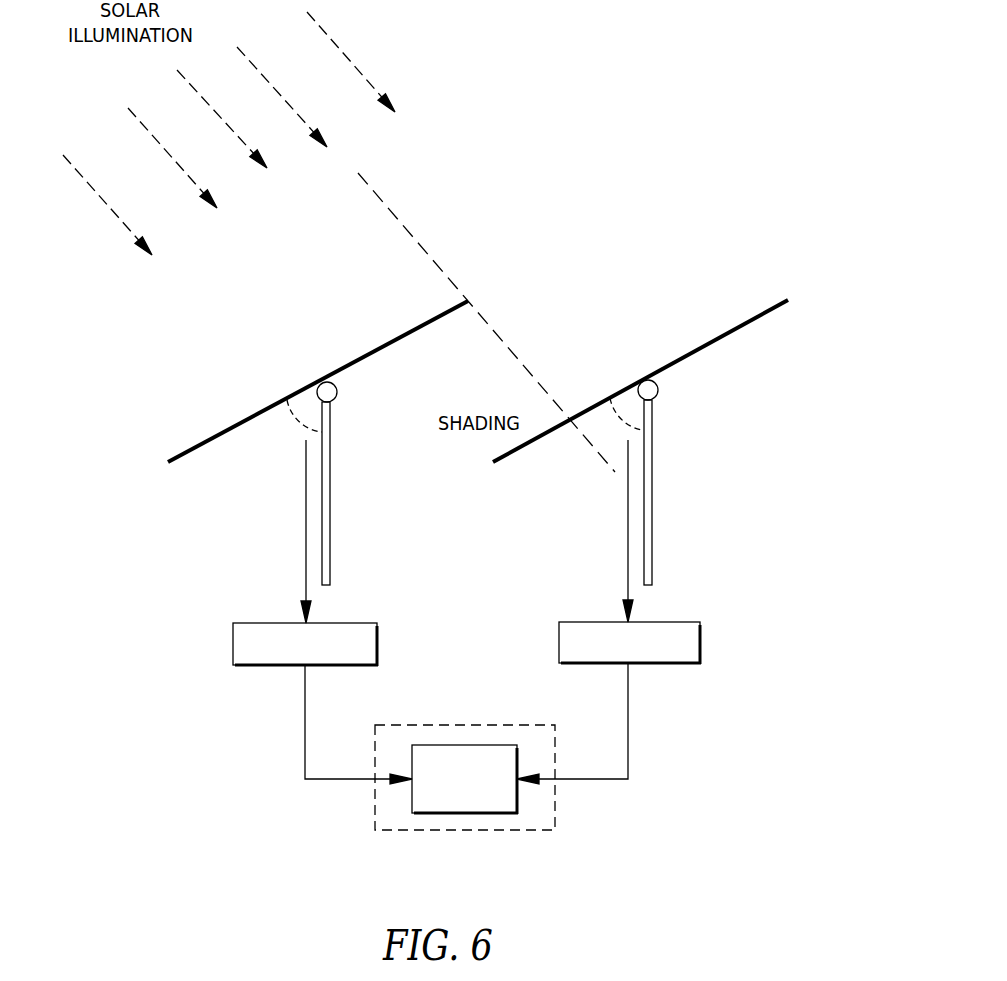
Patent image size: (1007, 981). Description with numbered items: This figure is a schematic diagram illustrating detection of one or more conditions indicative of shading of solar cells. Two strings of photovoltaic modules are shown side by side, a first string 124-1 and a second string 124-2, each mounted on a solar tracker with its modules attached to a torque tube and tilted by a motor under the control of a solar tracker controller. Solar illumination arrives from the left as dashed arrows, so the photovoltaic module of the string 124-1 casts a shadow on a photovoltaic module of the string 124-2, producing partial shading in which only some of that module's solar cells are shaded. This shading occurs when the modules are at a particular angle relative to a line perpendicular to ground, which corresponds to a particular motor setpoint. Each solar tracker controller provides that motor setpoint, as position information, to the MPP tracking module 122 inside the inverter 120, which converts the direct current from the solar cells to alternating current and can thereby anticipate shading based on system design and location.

The photovoltaic inverter 120 is at (490, 831).
The MPP tracking module 122 is at (490, 745).
The string 124-1 is at (185, 351).
The string 124-2 is at (716, 258).